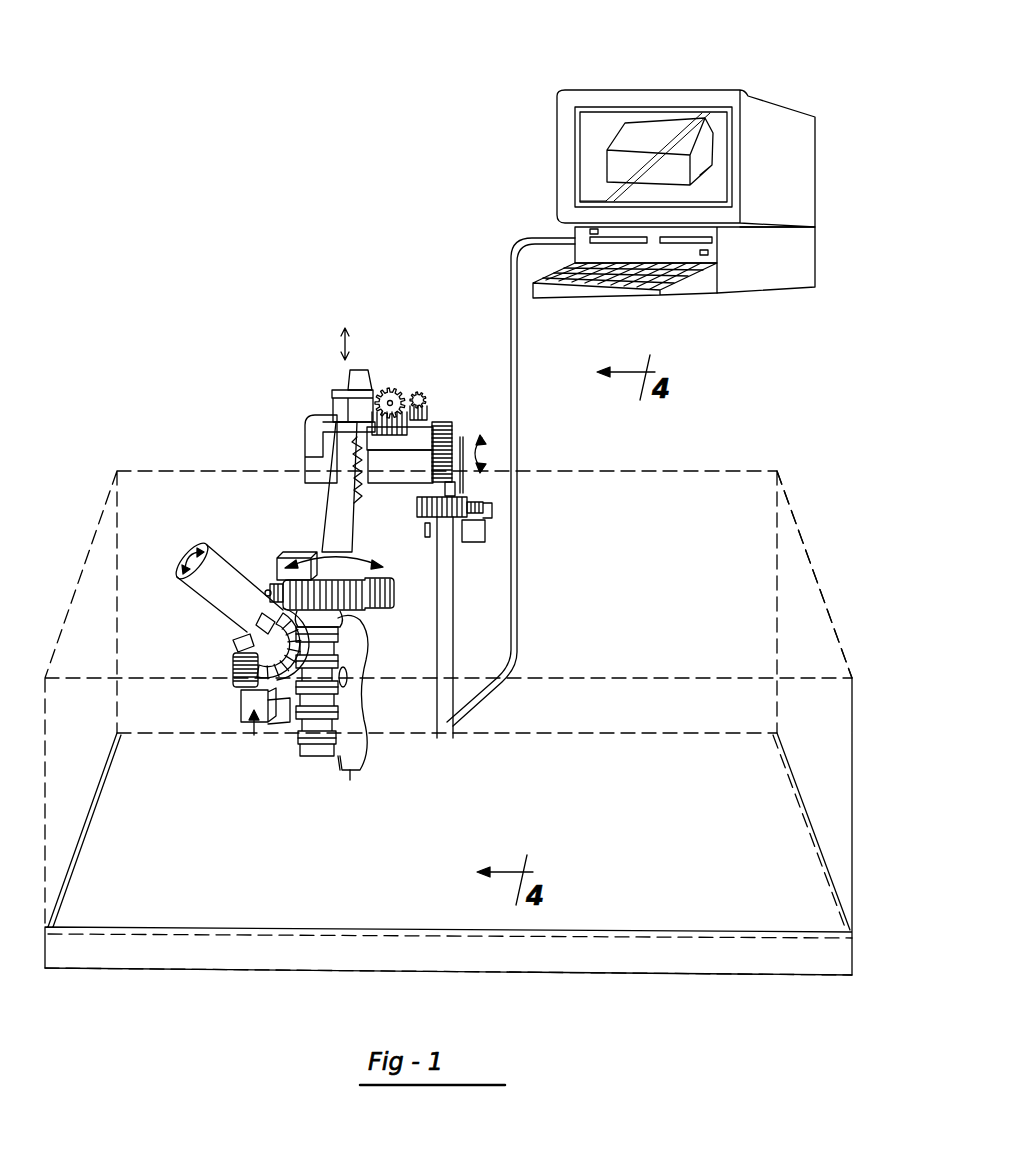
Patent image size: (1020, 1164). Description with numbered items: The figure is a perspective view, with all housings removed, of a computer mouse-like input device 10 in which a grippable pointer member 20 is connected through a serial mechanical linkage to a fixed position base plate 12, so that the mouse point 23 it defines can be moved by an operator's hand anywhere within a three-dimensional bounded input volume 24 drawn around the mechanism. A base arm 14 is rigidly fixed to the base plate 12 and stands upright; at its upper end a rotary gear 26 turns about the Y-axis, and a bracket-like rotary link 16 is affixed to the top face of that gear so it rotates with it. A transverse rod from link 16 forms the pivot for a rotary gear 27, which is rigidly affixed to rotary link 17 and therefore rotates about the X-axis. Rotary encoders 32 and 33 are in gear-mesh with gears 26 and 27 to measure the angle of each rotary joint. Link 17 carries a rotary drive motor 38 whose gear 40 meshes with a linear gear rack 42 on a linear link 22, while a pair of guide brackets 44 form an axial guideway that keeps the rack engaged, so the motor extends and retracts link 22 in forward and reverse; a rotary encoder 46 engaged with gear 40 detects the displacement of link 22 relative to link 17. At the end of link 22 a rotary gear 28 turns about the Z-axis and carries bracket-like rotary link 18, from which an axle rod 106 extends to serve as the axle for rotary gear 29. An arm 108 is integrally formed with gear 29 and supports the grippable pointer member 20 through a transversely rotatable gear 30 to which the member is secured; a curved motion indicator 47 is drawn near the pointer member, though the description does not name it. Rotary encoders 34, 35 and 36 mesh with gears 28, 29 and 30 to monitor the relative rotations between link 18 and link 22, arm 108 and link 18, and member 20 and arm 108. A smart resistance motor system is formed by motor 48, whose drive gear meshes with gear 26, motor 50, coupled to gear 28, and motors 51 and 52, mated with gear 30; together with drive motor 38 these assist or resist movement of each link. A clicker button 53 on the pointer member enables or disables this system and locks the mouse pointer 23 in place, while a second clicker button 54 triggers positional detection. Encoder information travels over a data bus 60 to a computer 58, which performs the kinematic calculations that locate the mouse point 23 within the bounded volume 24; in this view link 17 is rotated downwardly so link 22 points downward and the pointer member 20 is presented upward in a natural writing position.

The mouse 10 is at (217, 306).
The base plate 12 is at (638, 738).
The base arm 14 is at (454, 652).
The rotary link 16 is at (465, 452).
The rotary link 17 is at (318, 440).
The rotary link 18 is at (345, 635).
The grippable pointer member 20 is at (207, 600).
The linear link 22 is at (336, 492).
The mouse point 23 is at (292, 700).
The bounded input volume 24 is at (815, 574).
The rotary gear 26 is at (420, 512).
The rotary gear 27 is at (442, 426).
The rotary gear 28 is at (395, 603).
The rotary gear 29 is at (330, 758).
The transversely rotatable gear 30 is at (255, 660).
The rotary encoder 32 is at (486, 516).
The rotary encoder 33 is at (438, 495).
The rotary encoder 34 is at (273, 577).
The rotary encoder 35 is at (290, 735).
The rotary encoder 36 is at (238, 682).
The rotary drive motor 38 is at (398, 392).
The gear 40 is at (376, 388).
The linear gear rack 42 is at (356, 470).
The guide brackets 44 is at (332, 420).
The rotary encoder 46 is at (435, 393).
The direction arrow 47 is at (175, 544).
The motor 48 is at (486, 540).
The motor 50 is at (292, 546).
The motor 51 is at (254, 735).
The motor 52 is at (243, 694).
The clicker button 53 is at (264, 576).
The clicker button 54 is at (240, 640).
The computer 58 is at (683, 88).
The data bus 60 is at (514, 238).
The axle rod 106 is at (350, 760).
The arm 108 is at (366, 674).